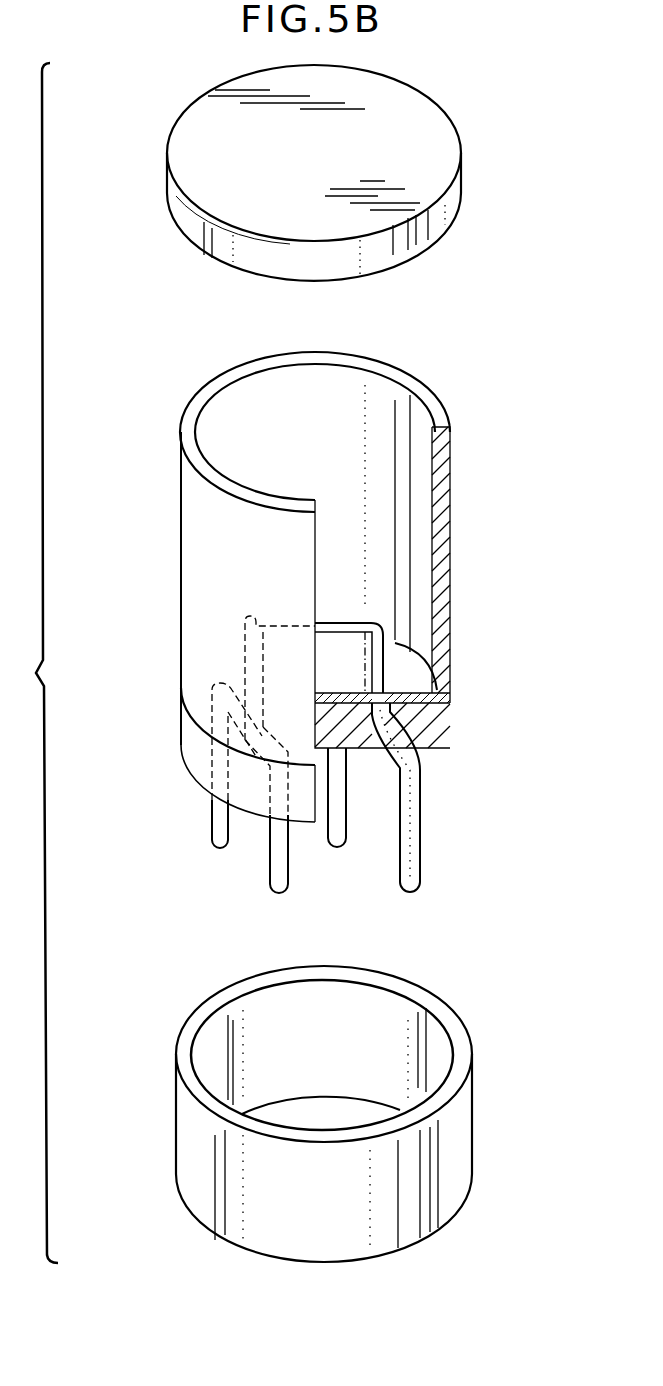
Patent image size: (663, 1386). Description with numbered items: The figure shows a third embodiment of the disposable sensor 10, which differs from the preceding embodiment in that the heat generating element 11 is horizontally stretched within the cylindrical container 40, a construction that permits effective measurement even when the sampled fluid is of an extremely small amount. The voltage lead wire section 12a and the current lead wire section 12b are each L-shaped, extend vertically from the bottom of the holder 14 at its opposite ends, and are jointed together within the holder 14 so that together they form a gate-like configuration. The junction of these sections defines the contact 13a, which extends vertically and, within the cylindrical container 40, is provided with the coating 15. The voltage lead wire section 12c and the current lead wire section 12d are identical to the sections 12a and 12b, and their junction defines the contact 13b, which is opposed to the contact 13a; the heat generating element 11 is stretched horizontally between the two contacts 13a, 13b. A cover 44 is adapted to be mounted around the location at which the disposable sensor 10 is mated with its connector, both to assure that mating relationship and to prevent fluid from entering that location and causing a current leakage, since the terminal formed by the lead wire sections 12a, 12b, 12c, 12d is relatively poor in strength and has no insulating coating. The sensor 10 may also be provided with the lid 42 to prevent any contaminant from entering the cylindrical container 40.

The disposable sensor 10 is at (452, 358).
The heat generating element 11 is at (367, 614).
The voltage lead wire section 12a is at (422, 856).
The current lead wire section 12b is at (338, 848).
The voltage lead wire section 12c is at (262, 888).
The current lead wire section 12d is at (208, 833).
The contact 13a is at (452, 703).
The contact 13b is at (245, 656).
The holder 14 is at (192, 742).
The coating 15 is at (452, 652).
The cylindrical container 40 is at (181, 478).
The lid 42 is at (443, 140).
The cover 44 is at (462, 1117).